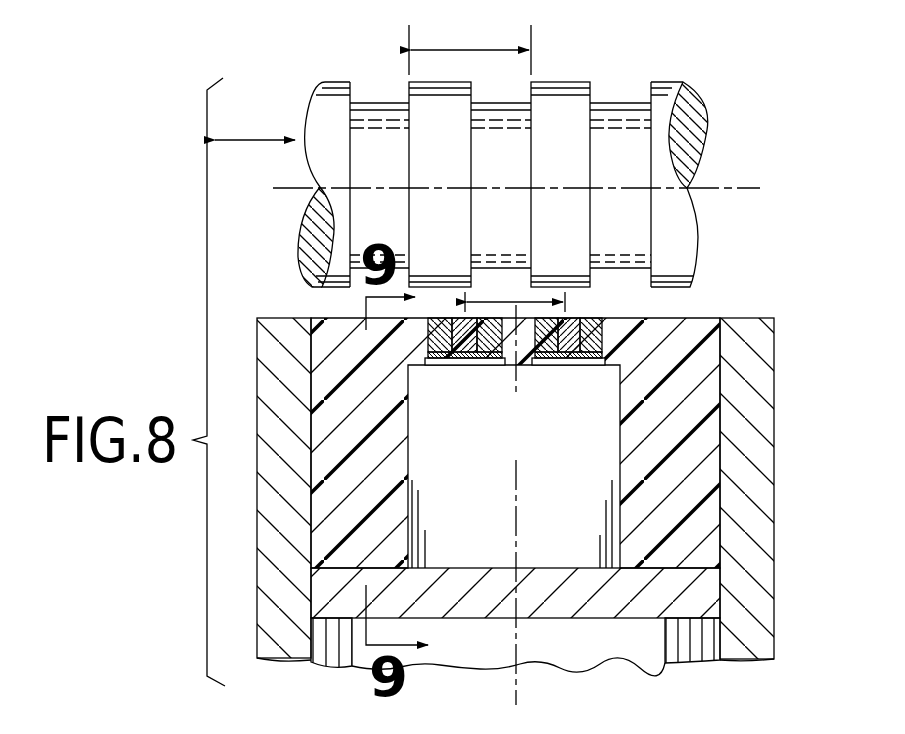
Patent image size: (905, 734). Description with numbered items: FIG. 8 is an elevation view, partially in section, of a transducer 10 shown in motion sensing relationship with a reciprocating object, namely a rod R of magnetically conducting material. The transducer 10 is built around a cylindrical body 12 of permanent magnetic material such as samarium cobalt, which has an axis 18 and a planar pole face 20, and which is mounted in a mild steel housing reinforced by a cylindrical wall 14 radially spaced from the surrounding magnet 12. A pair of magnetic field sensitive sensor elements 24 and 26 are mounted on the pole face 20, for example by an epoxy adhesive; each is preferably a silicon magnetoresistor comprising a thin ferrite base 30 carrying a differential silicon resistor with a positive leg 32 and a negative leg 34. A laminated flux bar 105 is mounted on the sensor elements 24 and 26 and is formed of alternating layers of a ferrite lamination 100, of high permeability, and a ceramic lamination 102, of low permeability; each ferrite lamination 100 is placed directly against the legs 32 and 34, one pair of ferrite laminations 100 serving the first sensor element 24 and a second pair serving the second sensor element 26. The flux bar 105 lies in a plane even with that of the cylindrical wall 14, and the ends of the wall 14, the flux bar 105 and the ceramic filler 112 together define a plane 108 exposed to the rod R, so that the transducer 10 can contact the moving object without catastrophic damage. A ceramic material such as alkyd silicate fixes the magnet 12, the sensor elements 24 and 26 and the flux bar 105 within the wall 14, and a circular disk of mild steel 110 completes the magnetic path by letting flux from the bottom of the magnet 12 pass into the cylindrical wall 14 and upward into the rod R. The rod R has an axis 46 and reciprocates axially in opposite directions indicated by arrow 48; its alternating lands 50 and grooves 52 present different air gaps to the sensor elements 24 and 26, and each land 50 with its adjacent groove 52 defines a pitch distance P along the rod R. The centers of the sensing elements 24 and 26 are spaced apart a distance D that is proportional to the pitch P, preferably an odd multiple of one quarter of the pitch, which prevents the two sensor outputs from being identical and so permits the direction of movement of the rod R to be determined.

The transducer 10 is at (760, 296).
The cylindrical body of permanent magnetic material 12 is at (627, 522).
The cylindrical wall 14 is at (547, 493).
The axis 18 is at (530, 672).
The planar pole face 20 is at (412, 365).
The magnetic field sensitive sensor element 24 is at (422, 351).
The magnetic field sensitive sensor element 26 is at (609, 349).
The thin base 30 is at (612, 363).
The positive leg 32 is at (480, 365).
The negative leg 34 is at (456, 365).
The axis 46 is at (523, 166).
The arrow 48 is at (270, 138).
The land 50 is at (565, 82).
The groove 52 is at (628, 103).
The ferrite lamination 100 is at (542, 372).
The ceramic lamination 102 is at (471, 365).
The laminated flux bar 105 is at (604, 314).
The plane 108 is at (325, 318).
The circular disk of mild steel 110 is at (508, 612).
The ceramic filler 112 is at (715, 538).
The pitch distance P is at (470, 50).
The distance D is at (515, 293).
The rod R is at (714, 103).